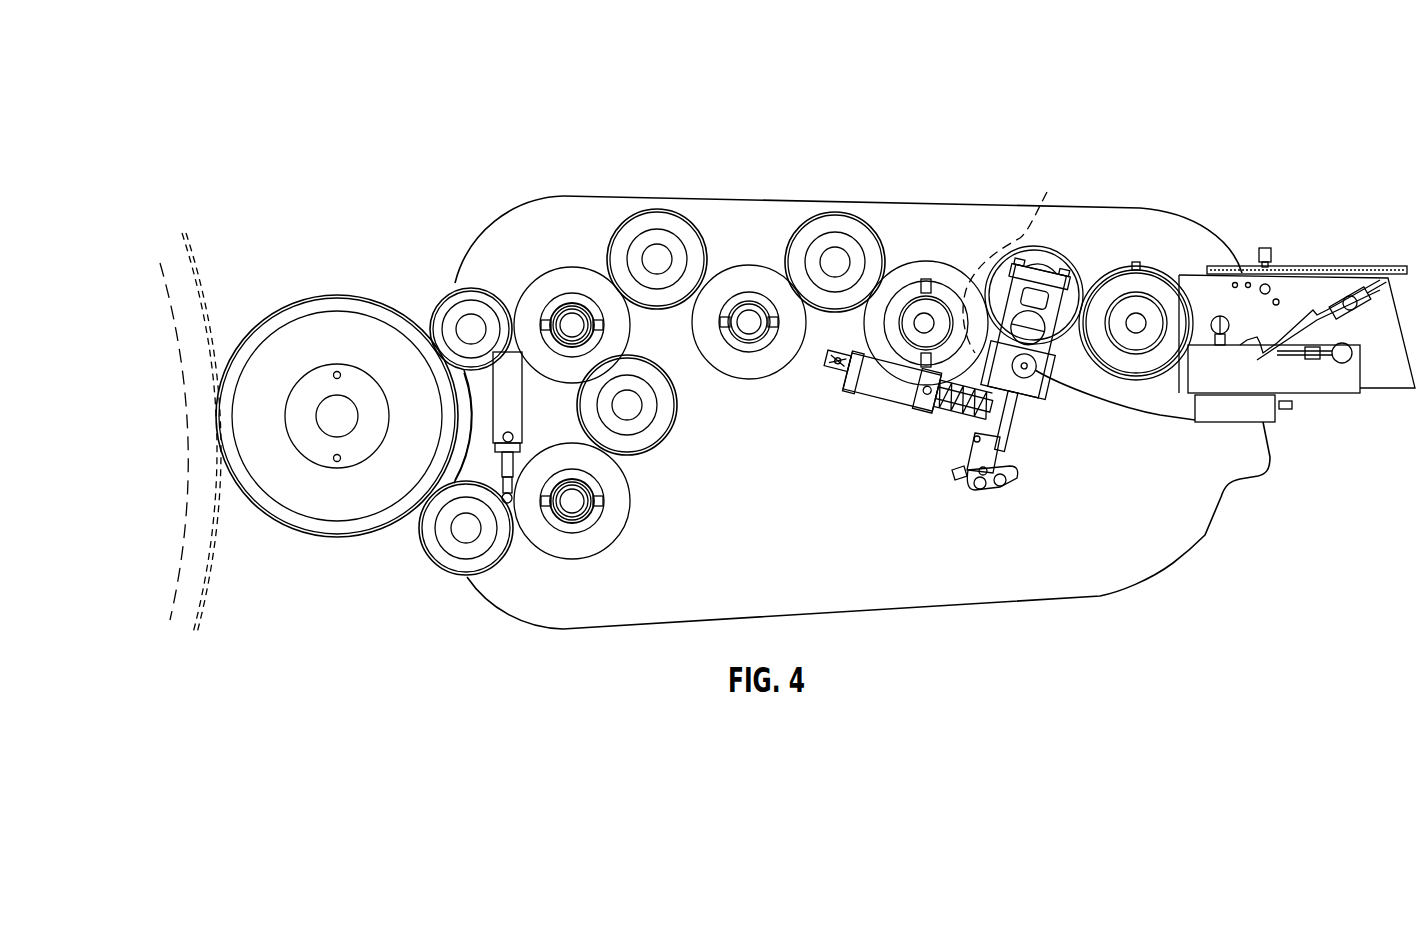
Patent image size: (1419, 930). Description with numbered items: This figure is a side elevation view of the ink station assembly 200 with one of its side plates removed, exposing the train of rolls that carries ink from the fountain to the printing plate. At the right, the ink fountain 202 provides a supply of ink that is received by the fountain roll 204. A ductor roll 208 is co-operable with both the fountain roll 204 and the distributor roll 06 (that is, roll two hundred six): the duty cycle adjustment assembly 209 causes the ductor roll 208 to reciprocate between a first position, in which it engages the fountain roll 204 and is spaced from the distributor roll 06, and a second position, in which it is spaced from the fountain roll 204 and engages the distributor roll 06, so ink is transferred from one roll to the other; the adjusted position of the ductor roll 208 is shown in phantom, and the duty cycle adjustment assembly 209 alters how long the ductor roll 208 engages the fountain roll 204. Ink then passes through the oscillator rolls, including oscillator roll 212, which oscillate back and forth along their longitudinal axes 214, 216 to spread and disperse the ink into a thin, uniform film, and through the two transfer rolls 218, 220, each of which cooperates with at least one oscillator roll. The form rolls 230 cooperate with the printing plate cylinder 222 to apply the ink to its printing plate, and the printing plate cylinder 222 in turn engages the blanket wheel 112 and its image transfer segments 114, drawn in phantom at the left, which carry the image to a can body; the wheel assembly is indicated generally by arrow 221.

The blanket wheel 112 is at (182, 452).
The image transfer segment 114 is at (190, 273).
The ink station assembly 200 is at (1098, 82).
The ink fountain 202 is at (1300, 268).
The fountain roll 204 is at (1150, 266).
The distributor roll 06 is at (930, 261).
The ductor roll 208 is at (1040, 206).
The duty cycle adjustment assembly 209 is at (866, 417).
The oscillator roll 212 is at (590, 412).
The longitudinal axis 214 is at (330, 296).
The longitudinal axis 216 is at (572, 330).
The transfer roll 218 is at (842, 213).
The transfer roll 220 is at (658, 209).
The wheel assembly 221 is at (511, 408).
The printing plate cylinder 222 is at (337, 462).
The form roll 230 is at (468, 288).